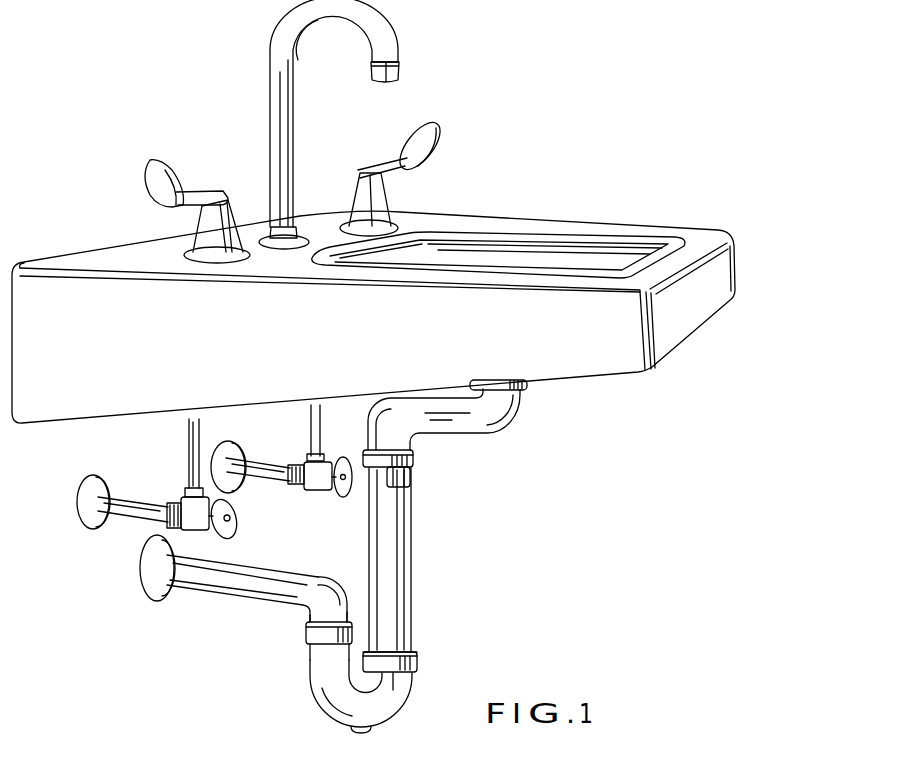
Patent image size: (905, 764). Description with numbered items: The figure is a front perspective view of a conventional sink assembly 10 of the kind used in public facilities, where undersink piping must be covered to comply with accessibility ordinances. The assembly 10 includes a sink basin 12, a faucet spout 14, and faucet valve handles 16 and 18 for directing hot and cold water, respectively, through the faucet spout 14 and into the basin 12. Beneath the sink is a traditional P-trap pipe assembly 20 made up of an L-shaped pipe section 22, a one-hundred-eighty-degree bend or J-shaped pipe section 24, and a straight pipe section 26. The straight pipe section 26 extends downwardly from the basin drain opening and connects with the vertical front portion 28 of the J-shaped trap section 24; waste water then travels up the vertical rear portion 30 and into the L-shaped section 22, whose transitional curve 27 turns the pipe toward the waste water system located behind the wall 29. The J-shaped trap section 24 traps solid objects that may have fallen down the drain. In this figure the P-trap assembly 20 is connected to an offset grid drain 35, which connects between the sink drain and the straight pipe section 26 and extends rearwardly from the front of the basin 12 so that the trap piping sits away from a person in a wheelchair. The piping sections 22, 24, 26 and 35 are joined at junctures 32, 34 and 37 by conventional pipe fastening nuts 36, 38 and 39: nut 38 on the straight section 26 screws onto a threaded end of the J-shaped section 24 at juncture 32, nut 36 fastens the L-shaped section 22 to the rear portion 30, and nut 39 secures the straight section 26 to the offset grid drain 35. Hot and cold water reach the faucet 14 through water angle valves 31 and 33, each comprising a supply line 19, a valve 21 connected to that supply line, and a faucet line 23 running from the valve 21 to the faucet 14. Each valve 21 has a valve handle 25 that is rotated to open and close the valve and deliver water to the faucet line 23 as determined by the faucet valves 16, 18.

The sink assembly 10 is at (666, 153).
The sink basin 12 is at (326, 333).
The faucet spout 14 is at (383, 21).
The faucet valve handle 16 is at (147, 191).
The faucet valve handle 18 is at (438, 137).
The supply line 19 is at (121, 495).
The P-trap pipe assembly 20 is at (466, 561).
The valve 21 is at (184, 490).
The L-shaped pipe section 22 is at (236, 598).
The faucet line 23 is at (187, 421).
The J-shaped pipe section 24 is at (316, 693).
The valve handle 25 is at (236, 529).
The straight pipe section 26 is at (411, 583).
The transitional curve 27 is at (349, 547).
The vertical front portion 28 is at (402, 663).
The wall 29 is at (100, 601).
The vertical rear portion 30 is at (312, 655).
The water angle valve 31 is at (144, 519).
The juncture 32 is at (311, 615).
The water angle valve 33 is at (294, 454).
The juncture 34 is at (414, 650).
The offset grid drain 35 is at (484, 435).
The pipe fastening nut 36 is at (308, 624).
The juncture 37 is at (414, 450).
The pipe fastening nut 38 is at (394, 692).
The pipe fastening nut 39 is at (396, 481).